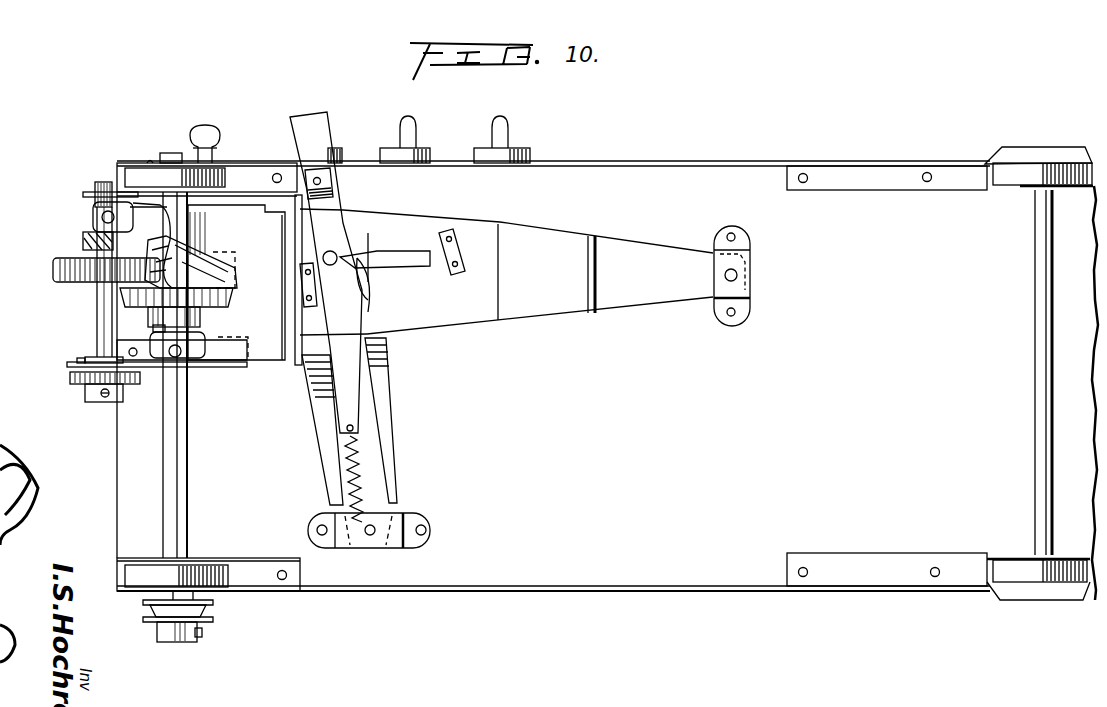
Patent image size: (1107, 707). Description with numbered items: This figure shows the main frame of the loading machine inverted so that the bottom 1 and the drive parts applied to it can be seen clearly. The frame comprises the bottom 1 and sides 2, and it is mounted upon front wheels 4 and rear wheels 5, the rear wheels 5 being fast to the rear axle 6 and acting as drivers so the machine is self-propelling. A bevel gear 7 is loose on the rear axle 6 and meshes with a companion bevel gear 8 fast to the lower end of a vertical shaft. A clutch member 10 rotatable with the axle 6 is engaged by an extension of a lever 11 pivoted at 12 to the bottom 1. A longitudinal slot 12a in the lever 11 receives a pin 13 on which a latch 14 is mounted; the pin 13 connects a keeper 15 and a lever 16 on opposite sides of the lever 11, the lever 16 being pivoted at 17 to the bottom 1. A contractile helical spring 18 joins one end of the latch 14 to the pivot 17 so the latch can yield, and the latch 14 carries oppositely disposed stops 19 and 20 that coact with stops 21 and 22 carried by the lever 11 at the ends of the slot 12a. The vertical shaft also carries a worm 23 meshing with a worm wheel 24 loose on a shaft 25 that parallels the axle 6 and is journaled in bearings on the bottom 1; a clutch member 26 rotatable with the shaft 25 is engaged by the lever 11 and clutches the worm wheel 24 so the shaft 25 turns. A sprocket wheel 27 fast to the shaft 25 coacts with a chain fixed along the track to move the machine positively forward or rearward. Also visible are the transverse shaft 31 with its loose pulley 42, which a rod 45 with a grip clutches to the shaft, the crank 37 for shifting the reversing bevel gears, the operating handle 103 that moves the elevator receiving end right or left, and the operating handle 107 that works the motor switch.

The bottom 1 is at (646, 556).
The sides 2 is at (700, 165).
The front wheels 4 is at (1025, 160).
The rear wheels 5 is at (137, 170).
The rear axle 6 is at (190, 508).
The bevel gear 7 is at (228, 300).
The bevel gear 8 is at (160, 252).
The clutch member 10 is at (166, 366).
The lever 11 is at (478, 325).
The pivot 12 is at (738, 276).
The longitudinal slot 12a is at (400, 254).
The pin 13 is at (342, 252).
The latch 14 is at (395, 338).
The keeper 15 is at (336, 190).
The lever 16 is at (330, 124).
The pivot 17 is at (370, 536).
The contractile helical spring 18 is at (366, 478).
The stop 19 is at (300, 258).
The stop 20 is at (372, 292).
The stop 21 is at (309, 309).
The stop 22 is at (455, 276).
The worm 23 is at (168, 245).
The worm wheel 24 is at (60, 282).
The shaft 25 is at (90, 195).
The clutch member 26 is at (83, 228).
The sprocket wheel 27 is at (72, 376).
The transverse shaft 31 is at (210, 600).
The crank 37 is at (418, 132).
The pulley 42 is at (157, 619).
The rod 45 is at (220, 138).
The operating handle 103 is at (342, 150).
The operating handle 107 is at (512, 135).